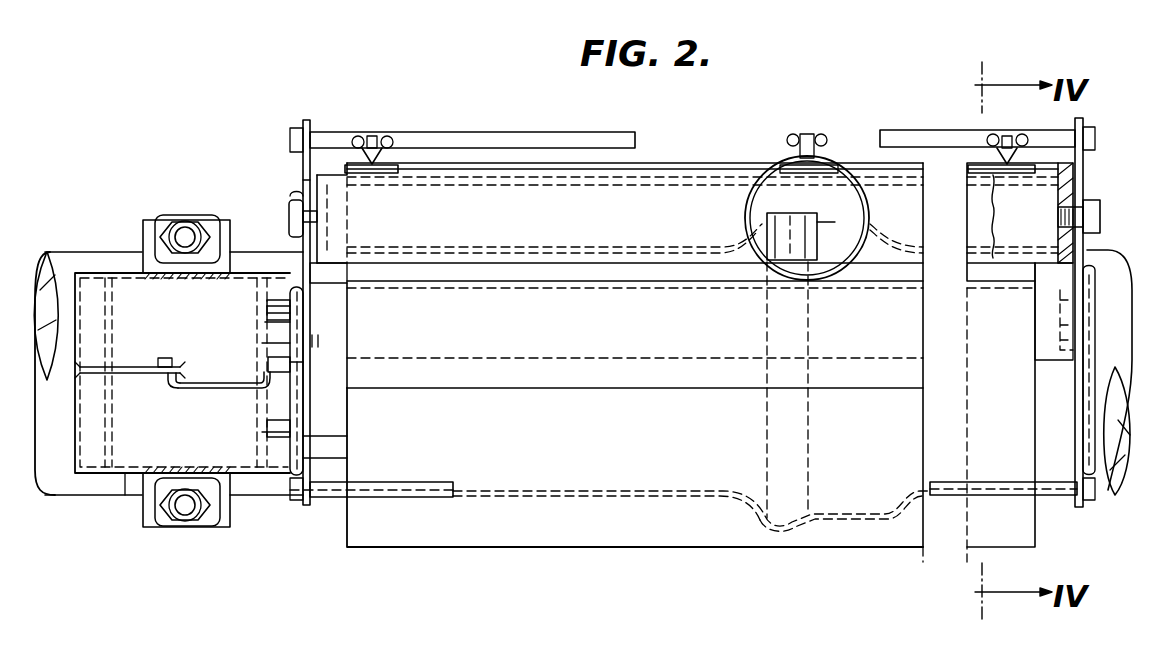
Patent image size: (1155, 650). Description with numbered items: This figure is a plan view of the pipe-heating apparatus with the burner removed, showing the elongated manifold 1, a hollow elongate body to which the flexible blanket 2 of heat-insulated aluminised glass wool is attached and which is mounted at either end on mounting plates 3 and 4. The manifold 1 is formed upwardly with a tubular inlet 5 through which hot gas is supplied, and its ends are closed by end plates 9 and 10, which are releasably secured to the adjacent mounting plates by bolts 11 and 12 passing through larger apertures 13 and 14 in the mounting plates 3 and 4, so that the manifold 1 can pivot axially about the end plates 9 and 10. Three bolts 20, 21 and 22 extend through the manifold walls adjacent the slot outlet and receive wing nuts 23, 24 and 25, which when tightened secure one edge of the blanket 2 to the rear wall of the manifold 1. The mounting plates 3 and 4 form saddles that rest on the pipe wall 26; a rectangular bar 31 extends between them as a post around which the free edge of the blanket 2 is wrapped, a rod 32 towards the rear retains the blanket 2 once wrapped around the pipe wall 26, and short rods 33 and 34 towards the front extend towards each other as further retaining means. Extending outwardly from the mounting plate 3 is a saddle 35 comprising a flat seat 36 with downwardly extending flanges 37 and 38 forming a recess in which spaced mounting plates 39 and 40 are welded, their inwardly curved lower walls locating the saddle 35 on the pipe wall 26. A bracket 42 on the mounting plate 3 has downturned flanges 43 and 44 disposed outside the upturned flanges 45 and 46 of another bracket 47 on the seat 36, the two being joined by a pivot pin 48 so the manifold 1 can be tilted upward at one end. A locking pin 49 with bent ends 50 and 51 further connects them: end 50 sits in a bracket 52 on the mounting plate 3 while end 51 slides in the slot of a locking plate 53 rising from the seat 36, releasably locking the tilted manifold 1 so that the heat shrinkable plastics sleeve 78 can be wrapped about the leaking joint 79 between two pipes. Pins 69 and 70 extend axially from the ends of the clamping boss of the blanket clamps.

The manifold 1 is at (687, 192).
The flexible blanket 2 is at (545, 540).
The mounting plate 3 is at (312, 124).
The mounting plate 4 is at (1085, 123).
The tubular inlet 5 is at (832, 166).
The end plate 9 is at (305, 185).
The end plate 10 is at (1075, 190).
The bolt 11 is at (297, 200).
The bolt 12 is at (1100, 208).
The aperture 13 is at (290, 214).
The aperture 14 is at (1085, 225).
The bolt 20 is at (400, 165).
The bolt 21 is at (800, 174).
The bolt 22 is at (1005, 167).
The wing nut 23 is at (392, 140).
The wing nut 24 is at (797, 138).
The wing nut 25 is at (995, 140).
The pipe wall 26 is at (1097, 498).
The rectangular bar 31 is at (660, 331).
The rod 32 is at (518, 132).
The short rod 33 is at (342, 495).
The short rod 34 is at (960, 497).
The saddle 35 is at (108, 478).
The seat 36 is at (90, 452).
The flange 37 is at (131, 475).
The flange 38 is at (88, 273).
The mounting plate 39 is at (112, 325).
The mounting plate 40 is at (265, 301).
The bracket 42 is at (265, 409).
The downturned flange 43 is at (305, 437).
The downturned flange 44 is at (292, 300).
The upturned flange 45 is at (268, 432).
The upturned flange 46 is at (265, 323).
The bracket 47 is at (270, 344).
The pivot pin 48 is at (305, 458).
The locking pin 49 is at (197, 388).
The pin end 50 is at (313, 341).
The pin end 51 is at (165, 381).
The bracket 52 is at (305, 380).
The locking plate 53 is at (128, 362).
The pin 69 is at (228, 235).
The pin 70 is at (150, 239).
The heat shrinkable plastics sleeve 78 is at (660, 497).
The joint 79 is at (778, 531).